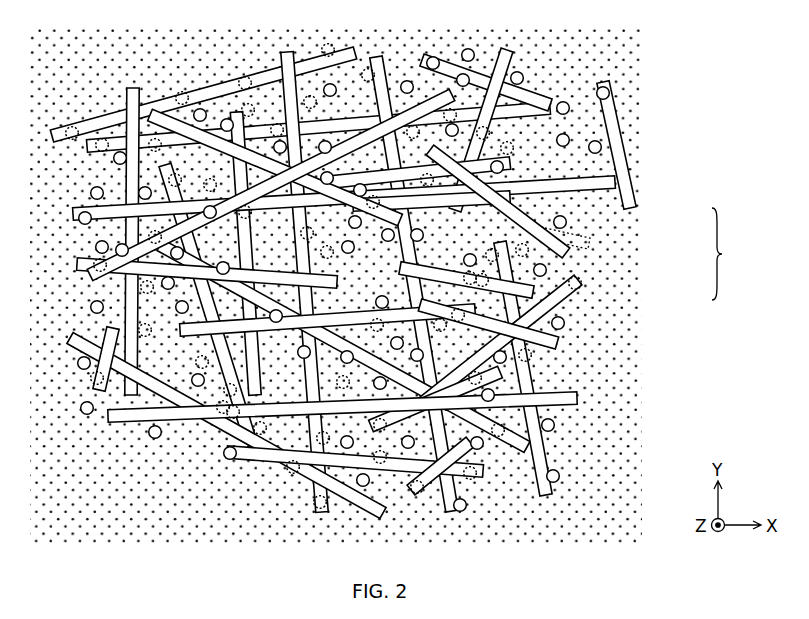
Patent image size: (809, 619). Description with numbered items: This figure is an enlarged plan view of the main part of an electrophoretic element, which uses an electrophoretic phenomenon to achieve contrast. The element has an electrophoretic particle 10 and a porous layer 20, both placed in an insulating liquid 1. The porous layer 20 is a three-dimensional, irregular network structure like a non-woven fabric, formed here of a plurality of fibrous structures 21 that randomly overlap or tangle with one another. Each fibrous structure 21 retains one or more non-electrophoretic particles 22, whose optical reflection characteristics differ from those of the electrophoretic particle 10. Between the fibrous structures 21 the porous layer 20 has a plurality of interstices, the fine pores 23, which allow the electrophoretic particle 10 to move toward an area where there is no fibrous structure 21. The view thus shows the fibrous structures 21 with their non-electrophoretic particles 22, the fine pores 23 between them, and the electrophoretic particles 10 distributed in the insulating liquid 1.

The insulating liquid 1 is at (635, 63).
The electrophoretic particle 10 is at (578, 108).
The porous layer 20 is at (732, 254).
The fibrous structure 21 is at (612, 232).
The non-electrophoretic particle 22 is at (583, 238).
The fine pore 23 is at (517, 367).